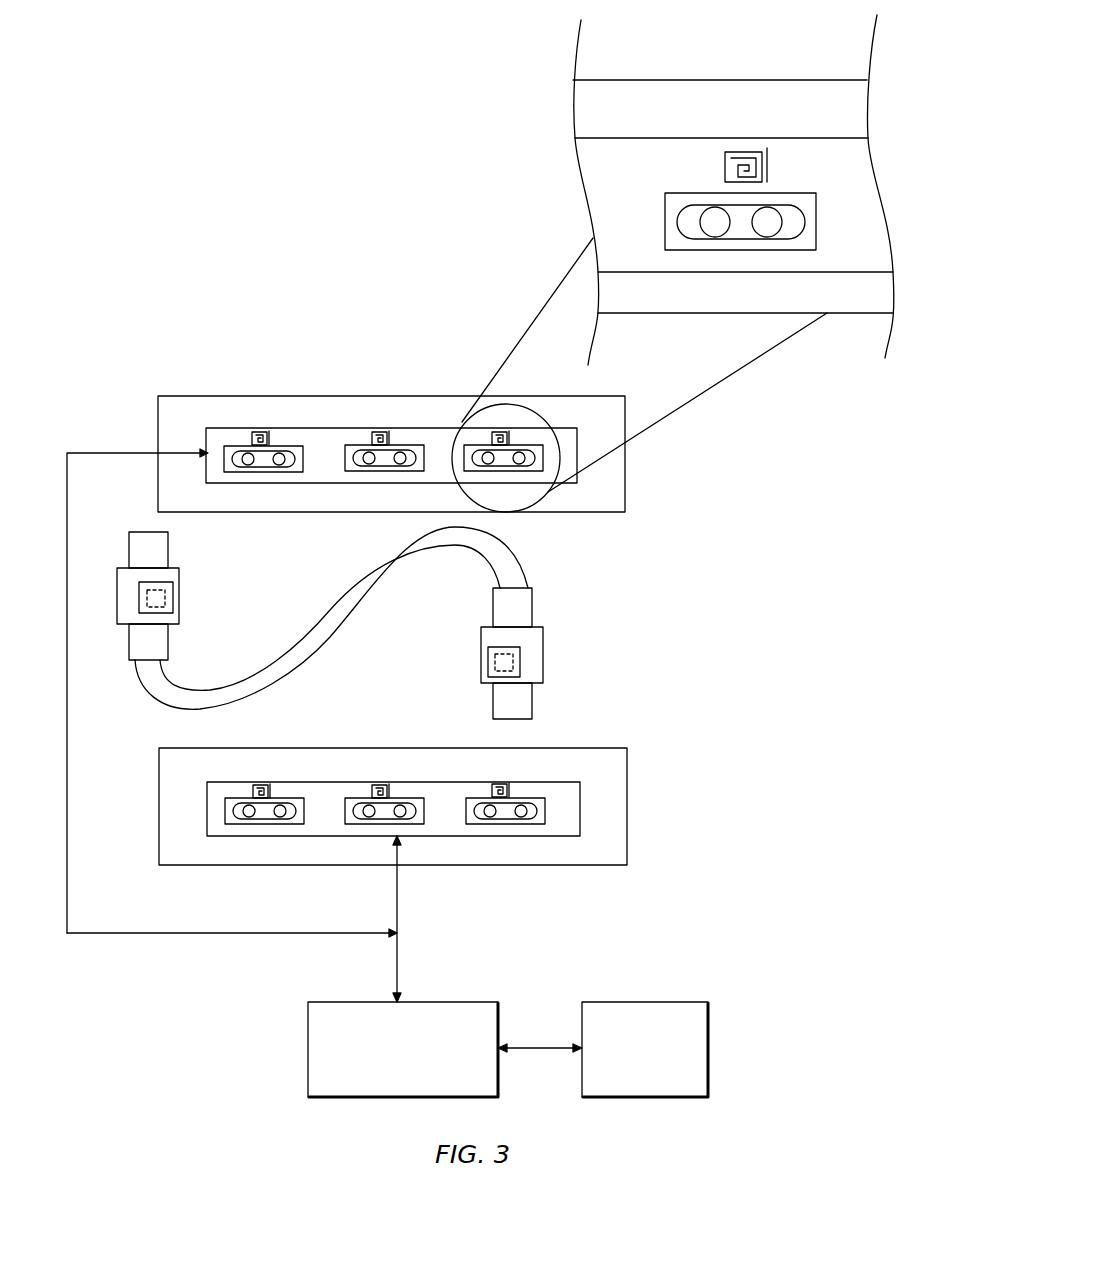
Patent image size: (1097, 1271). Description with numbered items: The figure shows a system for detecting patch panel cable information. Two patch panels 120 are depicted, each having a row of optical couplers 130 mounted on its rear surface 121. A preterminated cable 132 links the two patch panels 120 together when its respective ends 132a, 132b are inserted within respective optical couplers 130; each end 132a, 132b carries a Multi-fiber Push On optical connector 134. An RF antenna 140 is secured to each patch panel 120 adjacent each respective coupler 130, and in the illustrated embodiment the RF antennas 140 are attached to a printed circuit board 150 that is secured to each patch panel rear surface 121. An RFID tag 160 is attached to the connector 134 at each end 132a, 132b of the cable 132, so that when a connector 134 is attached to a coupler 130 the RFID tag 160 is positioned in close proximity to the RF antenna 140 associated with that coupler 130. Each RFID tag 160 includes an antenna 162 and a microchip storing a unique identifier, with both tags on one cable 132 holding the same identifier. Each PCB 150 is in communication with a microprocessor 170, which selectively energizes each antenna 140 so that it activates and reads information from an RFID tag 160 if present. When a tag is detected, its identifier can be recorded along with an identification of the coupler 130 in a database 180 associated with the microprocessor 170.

The patch panel 120 is at (780, 78).
The rear surface 121 is at (185, 417).
The optical coupler 130 is at (788, 193).
The preterminated cable 132 is at (273, 655).
The first end of cable 132a is at (172, 552).
The second end of cable 132b is at (533, 708).
The optical connector 134 is at (180, 578).
The RF antenna 140 is at (725, 160).
The printed circuit board 150 is at (792, 137).
The RFID tag 160 is at (173, 598).
The antenna 162 is at (139, 596).
The microprocessor 170 is at (403, 1049).
The database 180 is at (645, 1049).